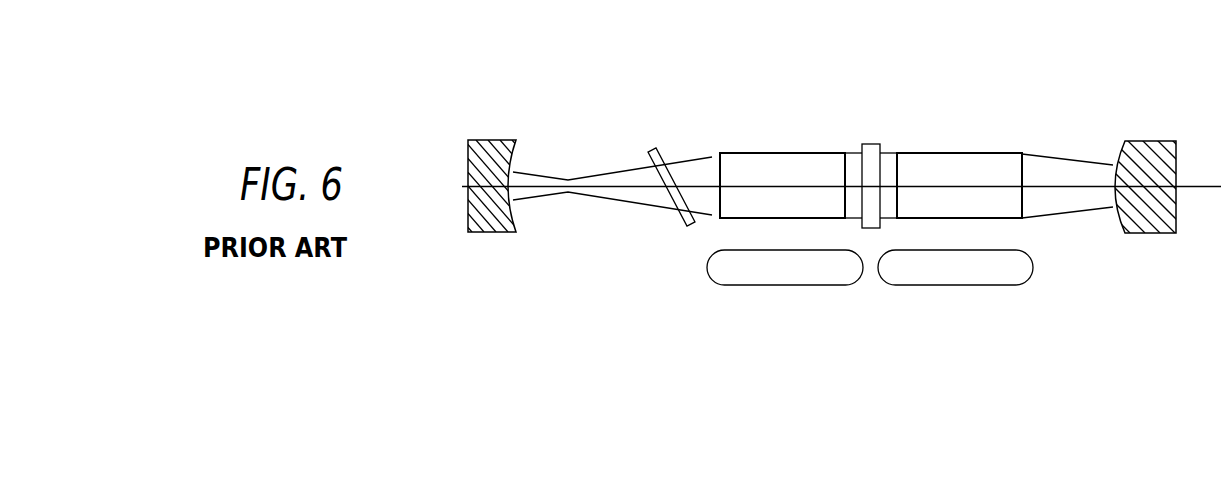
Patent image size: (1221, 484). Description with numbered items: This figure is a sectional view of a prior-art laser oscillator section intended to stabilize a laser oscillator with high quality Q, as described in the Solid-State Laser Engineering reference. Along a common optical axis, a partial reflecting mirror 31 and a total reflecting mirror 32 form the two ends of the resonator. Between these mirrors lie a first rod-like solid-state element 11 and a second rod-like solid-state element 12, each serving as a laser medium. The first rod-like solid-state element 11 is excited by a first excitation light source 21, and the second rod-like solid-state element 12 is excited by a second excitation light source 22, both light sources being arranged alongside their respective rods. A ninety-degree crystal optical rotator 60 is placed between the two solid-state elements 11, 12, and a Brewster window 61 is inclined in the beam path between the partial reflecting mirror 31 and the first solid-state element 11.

The first rod-like solid-state element 11 is at (747, 202).
The second rod-like solid-state element 12 is at (923, 202).
The first excitation light source 21 is at (833, 270).
The second excitation light source 22 is at (1008, 270).
The partial reflecting mirror 31 is at (497, 153).
The total reflecting mirror 32 is at (1152, 148).
The 90° crystal optical rotator 60 is at (873, 158).
The Brewster window 61 is at (658, 149).